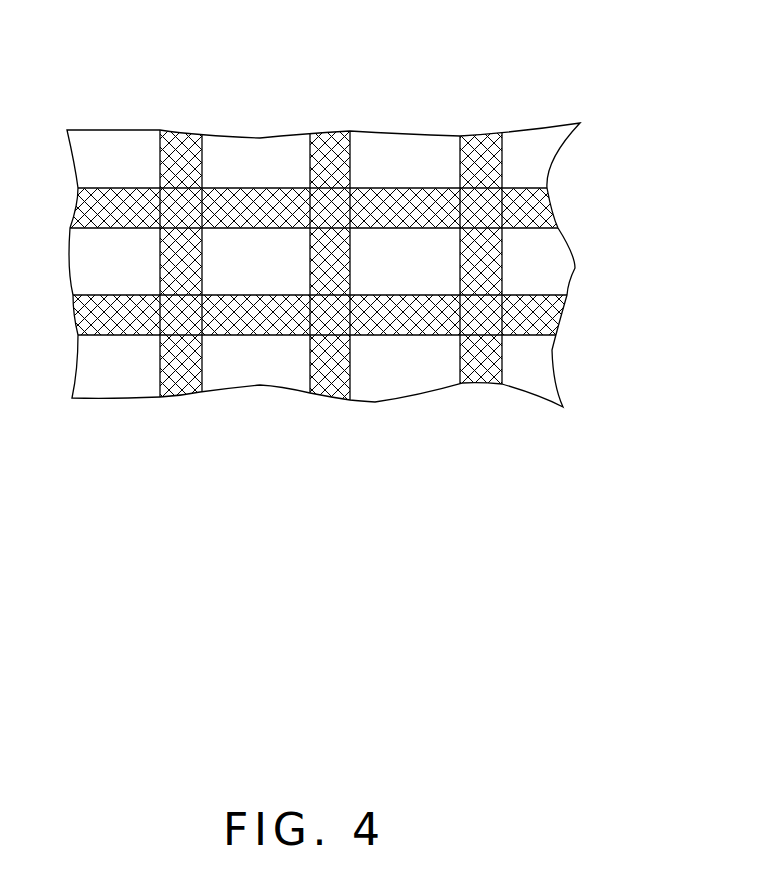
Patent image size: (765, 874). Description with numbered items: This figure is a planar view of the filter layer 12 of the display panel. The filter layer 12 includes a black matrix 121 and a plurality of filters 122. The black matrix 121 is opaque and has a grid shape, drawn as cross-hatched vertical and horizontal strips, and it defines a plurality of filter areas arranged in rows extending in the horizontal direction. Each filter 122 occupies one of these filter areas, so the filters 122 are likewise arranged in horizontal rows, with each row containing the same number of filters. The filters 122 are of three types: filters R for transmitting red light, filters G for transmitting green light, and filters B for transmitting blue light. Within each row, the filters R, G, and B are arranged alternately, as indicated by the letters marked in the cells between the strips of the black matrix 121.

The filter layer 12 is at (342, 35).
The black matrix 121 is at (483, 212).
The filters 122 is at (432, 282).